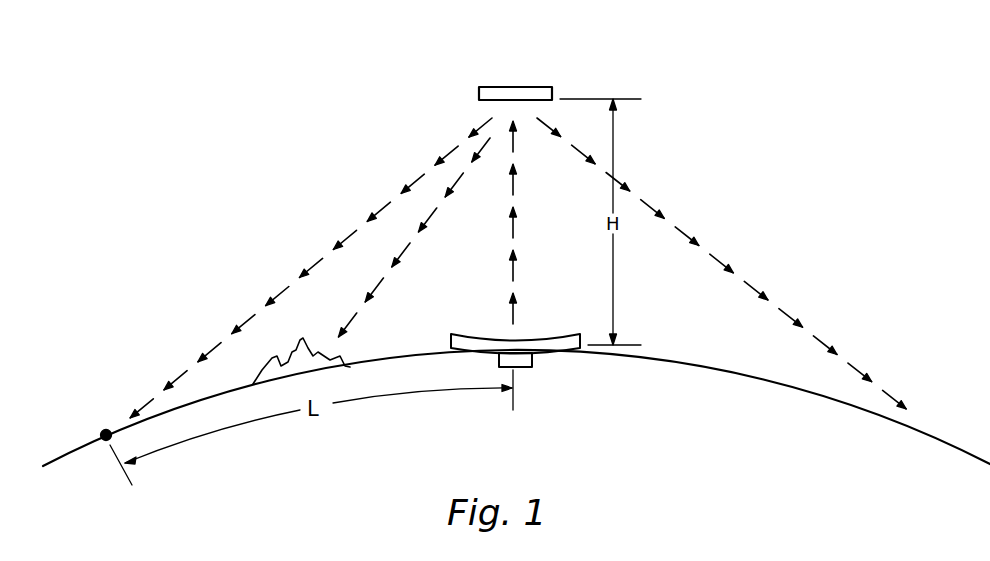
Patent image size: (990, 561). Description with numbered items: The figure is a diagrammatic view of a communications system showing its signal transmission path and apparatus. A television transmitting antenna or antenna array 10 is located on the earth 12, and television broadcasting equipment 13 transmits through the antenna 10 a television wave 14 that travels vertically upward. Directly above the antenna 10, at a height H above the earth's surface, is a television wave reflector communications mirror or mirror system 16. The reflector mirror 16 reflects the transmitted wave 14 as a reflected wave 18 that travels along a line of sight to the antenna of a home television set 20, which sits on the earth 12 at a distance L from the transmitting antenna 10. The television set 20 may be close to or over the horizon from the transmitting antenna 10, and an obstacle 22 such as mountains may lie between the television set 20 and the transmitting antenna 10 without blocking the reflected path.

The television transmitting antenna 10 is at (543, 359).
The earth 12 is at (942, 435).
The television broadcasting equipment 13 is at (517, 370).
The television wave 14 is at (518, 272).
The reflector communications mirror 16 is at (490, 81).
The reflected wave 18 is at (318, 264).
The home television set 20 is at (104, 432).
The obstacle 22 is at (350, 360).